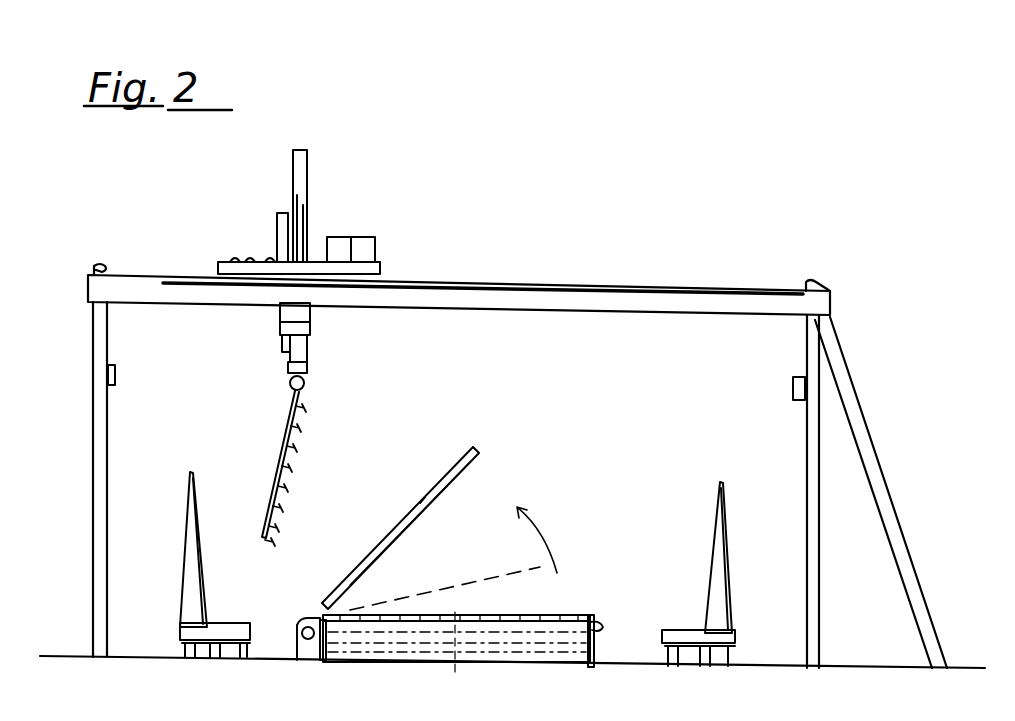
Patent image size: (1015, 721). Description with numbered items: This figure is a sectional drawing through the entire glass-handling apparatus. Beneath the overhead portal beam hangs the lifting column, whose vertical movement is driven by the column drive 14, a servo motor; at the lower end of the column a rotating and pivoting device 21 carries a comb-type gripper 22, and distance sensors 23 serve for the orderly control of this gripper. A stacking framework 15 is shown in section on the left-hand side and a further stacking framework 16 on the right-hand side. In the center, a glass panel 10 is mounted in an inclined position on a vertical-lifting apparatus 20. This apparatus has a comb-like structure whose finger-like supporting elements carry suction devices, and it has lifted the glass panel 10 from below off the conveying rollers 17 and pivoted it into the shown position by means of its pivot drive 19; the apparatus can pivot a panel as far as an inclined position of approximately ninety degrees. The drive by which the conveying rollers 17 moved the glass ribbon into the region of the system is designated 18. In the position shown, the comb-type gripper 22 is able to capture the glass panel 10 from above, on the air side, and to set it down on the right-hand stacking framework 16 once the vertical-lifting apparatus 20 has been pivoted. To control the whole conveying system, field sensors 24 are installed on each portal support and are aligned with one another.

The glass panel 10 is at (418, 500).
The column drive 14 is at (327, 313).
The stacking framework 15 is at (180, 532).
The stacking framework 16 is at (727, 530).
The conveying rollers 17 is at (565, 618).
The drive 18 is at (605, 625).
The pivot drive 19 is at (322, 650).
The vertical-lifting apparatus 20 is at (437, 498).
The rotating and pivoting device 21 is at (305, 381).
The comb-type gripper 22 is at (282, 440).
The distance sensors 23 is at (265, 503).
The field sensors 24 is at (797, 390).